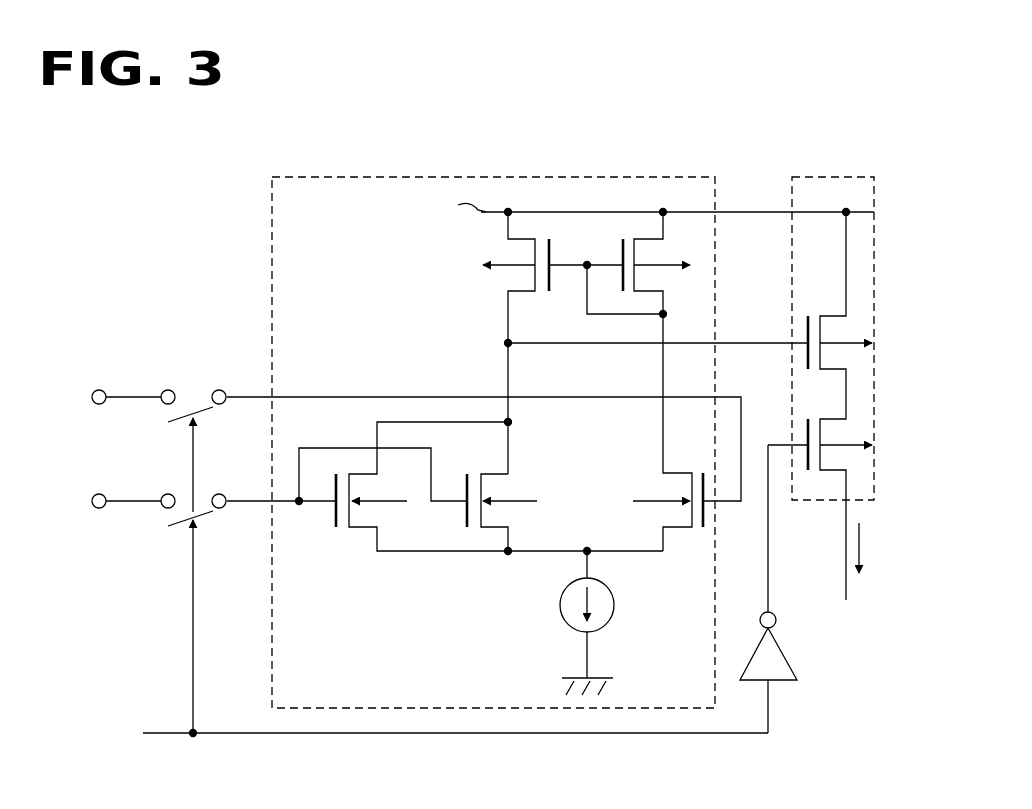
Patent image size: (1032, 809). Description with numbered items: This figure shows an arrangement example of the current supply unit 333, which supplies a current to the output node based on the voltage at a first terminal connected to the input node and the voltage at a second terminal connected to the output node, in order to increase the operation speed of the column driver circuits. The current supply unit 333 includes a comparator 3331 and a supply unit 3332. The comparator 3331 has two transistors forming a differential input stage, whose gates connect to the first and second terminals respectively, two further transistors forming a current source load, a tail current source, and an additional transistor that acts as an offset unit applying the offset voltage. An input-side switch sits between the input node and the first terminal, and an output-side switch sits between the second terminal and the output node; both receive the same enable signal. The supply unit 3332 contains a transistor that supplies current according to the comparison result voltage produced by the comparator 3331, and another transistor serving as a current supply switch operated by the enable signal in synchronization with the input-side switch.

The current supply unit 333 is at (557, 118).
The comparator 3331 is at (323, 176).
The supply unit 3332 is at (840, 176).